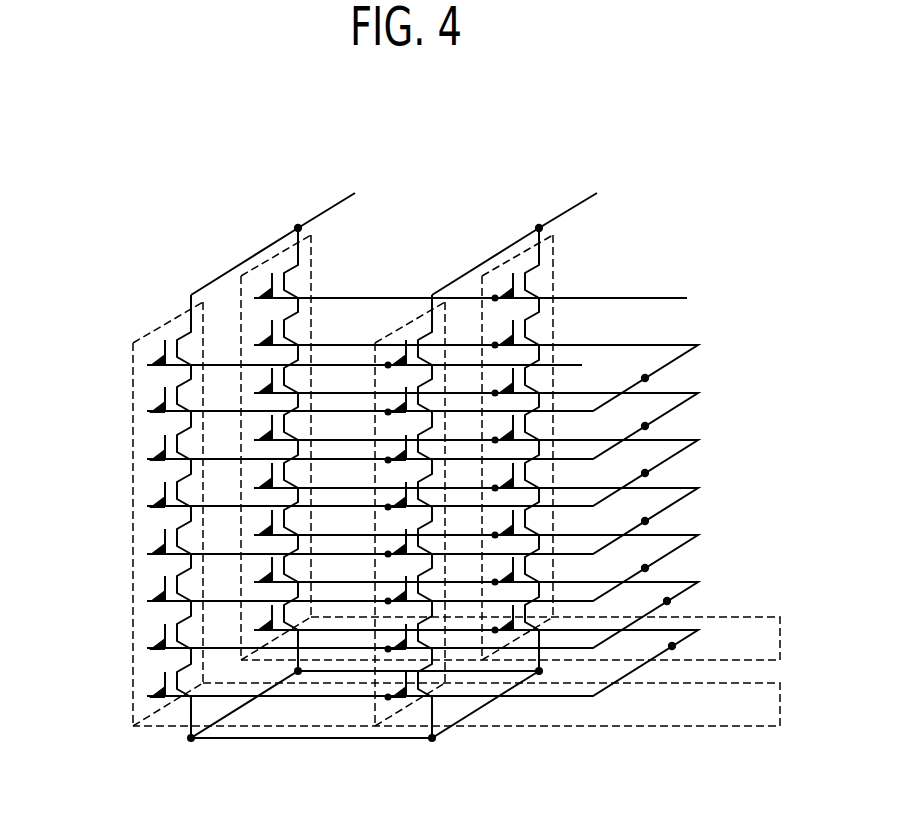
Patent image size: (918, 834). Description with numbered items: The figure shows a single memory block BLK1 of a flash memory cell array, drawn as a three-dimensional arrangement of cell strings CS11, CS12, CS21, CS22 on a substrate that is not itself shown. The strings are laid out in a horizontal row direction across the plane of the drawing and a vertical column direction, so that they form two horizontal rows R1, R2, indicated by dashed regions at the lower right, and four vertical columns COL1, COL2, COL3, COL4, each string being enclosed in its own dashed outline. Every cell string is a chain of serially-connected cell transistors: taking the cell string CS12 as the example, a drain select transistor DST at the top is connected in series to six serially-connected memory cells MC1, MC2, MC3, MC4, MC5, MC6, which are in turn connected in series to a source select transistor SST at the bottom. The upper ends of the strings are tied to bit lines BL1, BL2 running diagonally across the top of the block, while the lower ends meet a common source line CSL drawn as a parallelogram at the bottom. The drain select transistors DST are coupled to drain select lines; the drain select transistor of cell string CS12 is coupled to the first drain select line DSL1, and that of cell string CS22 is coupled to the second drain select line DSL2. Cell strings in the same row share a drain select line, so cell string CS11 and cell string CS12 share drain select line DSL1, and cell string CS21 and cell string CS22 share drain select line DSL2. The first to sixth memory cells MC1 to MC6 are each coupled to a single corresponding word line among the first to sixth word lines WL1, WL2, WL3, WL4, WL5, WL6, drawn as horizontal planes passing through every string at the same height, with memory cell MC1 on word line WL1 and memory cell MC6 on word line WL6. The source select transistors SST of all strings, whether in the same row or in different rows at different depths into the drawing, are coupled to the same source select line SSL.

The memory block BLK1 is at (705, 142).
The bit line BL1 is at (524, 230).
The bit line BL2 is at (284, 230).
The first vertical column COL1 is at (120, 510).
The second vertical column COL2 is at (258, 256).
The third vertical column COL3 is at (398, 326).
The fourth vertical column COL4 is at (505, 263).
The cell string CS11 is at (408, 323).
The cell string CS12 is at (165, 324).
The cell string CS21 is at (514, 257).
The cell string CS22 is at (274, 257).
The drain select transistor DST is at (157, 348).
The first memory cell MC1 is at (157, 632).
The second memory cell MC2 is at (157, 584).
The third memory cell MC3 is at (157, 537).
The fourth memory cell MC4 is at (157, 490).
The fifth memory cell MC5 is at (157, 443).
The sixth memory cell MC6 is at (157, 395).
The source select transistor SST is at (157, 680).
The first drain select line DSL1 is at (386, 366).
The second drain select line DSL2 is at (494, 299).
The first word line WL1 is at (667, 601).
The second word line WL2 is at (645, 568).
The third word line WL3 is at (645, 521).
The fourth word line WL4 is at (645, 473).
The fifth word line WL5 is at (645, 426).
The sixth word line WL6 is at (645, 378).
The source select line SSL is at (672, 646).
The common source line CSL is at (365, 712).
The first horizontal row R1 is at (783, 683).
The second horizontal row R2 is at (783, 617).